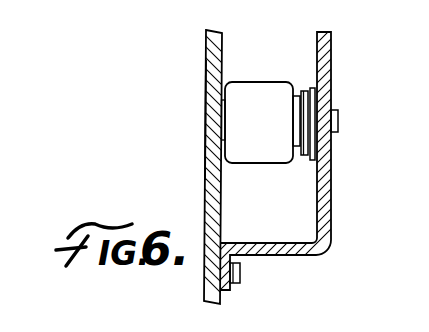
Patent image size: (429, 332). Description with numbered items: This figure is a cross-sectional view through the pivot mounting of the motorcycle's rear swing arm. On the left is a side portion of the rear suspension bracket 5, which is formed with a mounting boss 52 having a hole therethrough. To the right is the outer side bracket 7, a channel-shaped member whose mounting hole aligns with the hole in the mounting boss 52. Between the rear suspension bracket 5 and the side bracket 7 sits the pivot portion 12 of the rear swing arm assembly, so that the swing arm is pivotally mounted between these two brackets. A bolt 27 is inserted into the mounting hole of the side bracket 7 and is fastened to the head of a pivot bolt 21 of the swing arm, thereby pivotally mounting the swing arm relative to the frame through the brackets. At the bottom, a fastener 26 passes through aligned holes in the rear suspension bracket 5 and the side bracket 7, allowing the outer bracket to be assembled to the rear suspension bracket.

The rear suspension bracket 5 is at (200, 58).
The mounting boss 52 is at (206, 119).
The side bracket 7 is at (338, 192).
The pivot portion 12 is at (267, 153).
The pivot bolt 21 is at (301, 88).
The bolt 27 is at (338, 125).
The fastener 26 is at (240, 268).